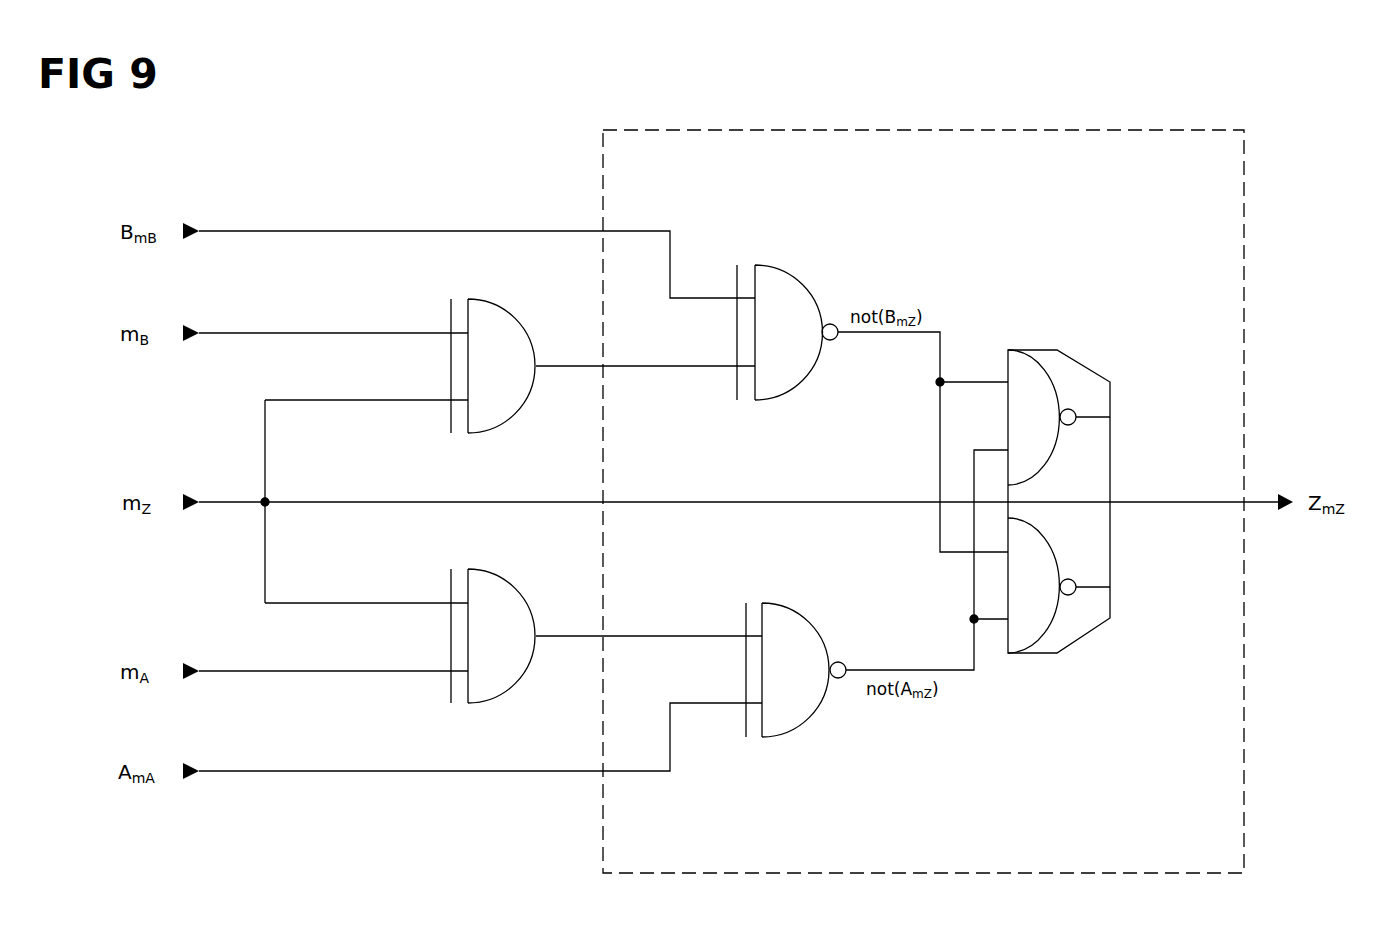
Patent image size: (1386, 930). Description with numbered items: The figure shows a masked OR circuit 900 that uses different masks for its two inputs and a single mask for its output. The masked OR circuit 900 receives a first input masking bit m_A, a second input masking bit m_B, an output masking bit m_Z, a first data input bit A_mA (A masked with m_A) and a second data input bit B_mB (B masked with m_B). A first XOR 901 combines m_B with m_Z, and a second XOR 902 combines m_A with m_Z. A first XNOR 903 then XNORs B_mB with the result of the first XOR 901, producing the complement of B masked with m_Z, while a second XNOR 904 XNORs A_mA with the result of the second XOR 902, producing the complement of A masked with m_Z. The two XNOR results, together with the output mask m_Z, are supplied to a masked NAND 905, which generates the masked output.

The masked OR circuit 900 is at (1278, 103).
The first XOR 901 is at (521, 323).
The second XOR 902 is at (521, 592).
The first XNOR 903 is at (808, 290).
The second XNOR 904 is at (818, 630).
The masked NAND 905 is at (1098, 375).